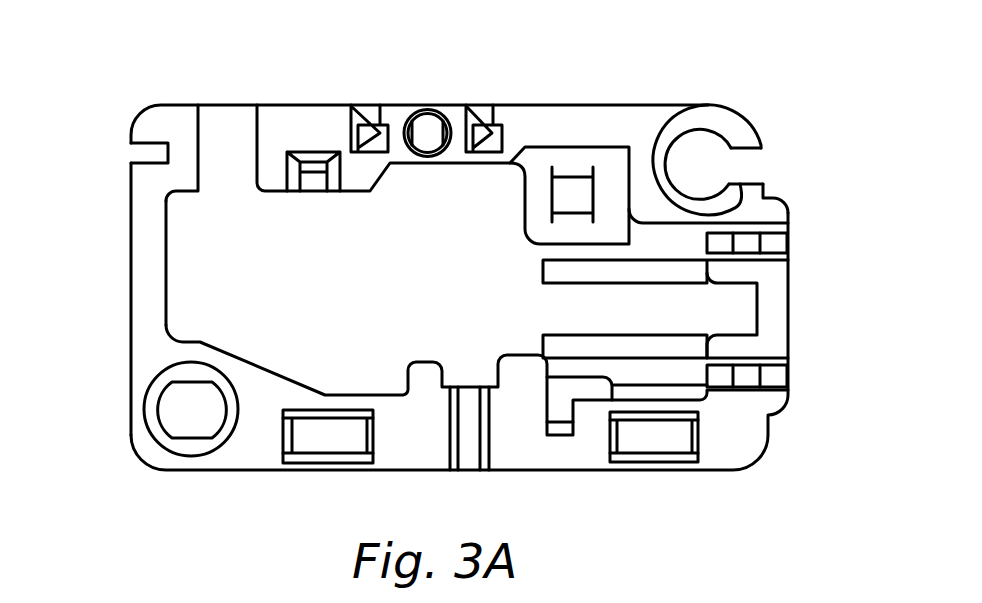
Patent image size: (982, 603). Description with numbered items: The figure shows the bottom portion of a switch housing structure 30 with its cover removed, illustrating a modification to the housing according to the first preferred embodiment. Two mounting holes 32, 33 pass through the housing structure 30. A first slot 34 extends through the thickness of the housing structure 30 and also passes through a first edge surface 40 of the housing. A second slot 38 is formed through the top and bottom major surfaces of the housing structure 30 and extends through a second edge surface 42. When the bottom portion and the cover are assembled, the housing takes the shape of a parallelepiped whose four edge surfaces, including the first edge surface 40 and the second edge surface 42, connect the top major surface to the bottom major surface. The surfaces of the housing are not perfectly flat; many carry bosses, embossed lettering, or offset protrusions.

The housing structure 30 is at (585, 122).
The mounting hole 32 is at (695, 152).
The mounting hole 33 is at (178, 423).
The first slot 34 is at (762, 165).
The second slot 38 is at (130, 152).
The first edge surface 40 is at (765, 185).
The second edge surface 42 is at (130, 295).